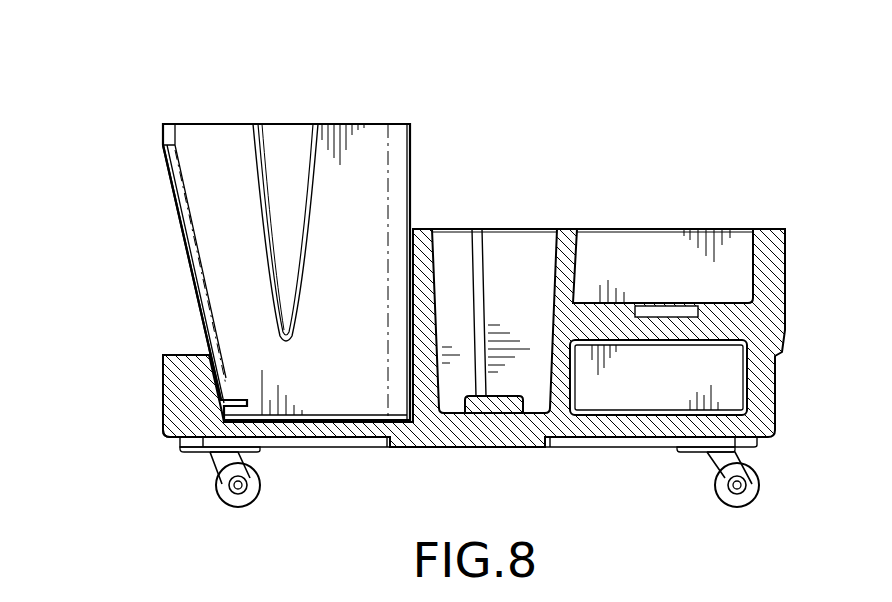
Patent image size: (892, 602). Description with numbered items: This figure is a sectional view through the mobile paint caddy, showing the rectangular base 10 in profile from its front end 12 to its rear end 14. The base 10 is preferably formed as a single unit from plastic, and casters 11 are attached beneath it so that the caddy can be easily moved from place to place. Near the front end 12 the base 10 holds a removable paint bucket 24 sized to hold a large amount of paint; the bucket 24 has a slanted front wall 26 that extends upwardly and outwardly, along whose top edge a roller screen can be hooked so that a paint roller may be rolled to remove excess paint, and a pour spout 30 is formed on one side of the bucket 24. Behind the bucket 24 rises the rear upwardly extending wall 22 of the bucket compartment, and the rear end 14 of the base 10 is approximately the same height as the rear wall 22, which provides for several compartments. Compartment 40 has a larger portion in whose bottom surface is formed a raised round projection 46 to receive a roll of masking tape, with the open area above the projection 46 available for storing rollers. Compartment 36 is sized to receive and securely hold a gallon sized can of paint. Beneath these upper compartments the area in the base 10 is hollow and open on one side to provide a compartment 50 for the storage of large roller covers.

The base 10 is at (428, 448).
The casters 11 is at (217, 490).
The front end 12 is at (165, 393).
The rear end 14 is at (785, 285).
The rear upwardly extending wall 22 is at (420, 228).
The paint bucket 24 is at (380, 124).
The slanted front wall 26 is at (187, 251).
The pour spout 30 is at (285, 134).
The compartment 36 is at (675, 250).
The compartment 40 is at (502, 243).
The raised round projection 46 is at (502, 400).
The compartment 50 is at (720, 367).